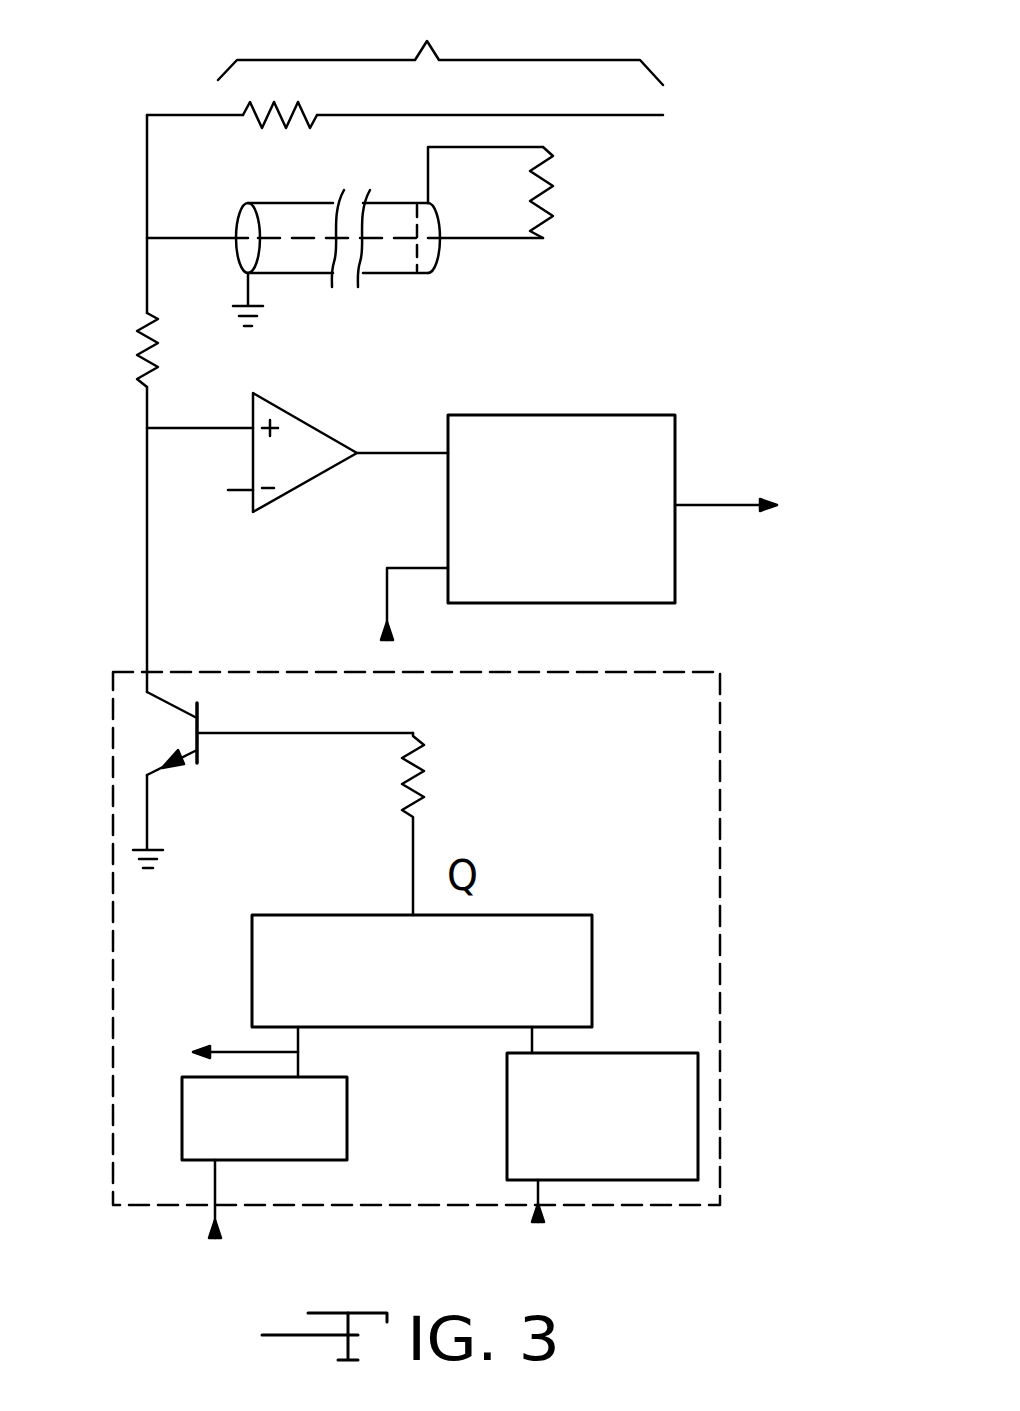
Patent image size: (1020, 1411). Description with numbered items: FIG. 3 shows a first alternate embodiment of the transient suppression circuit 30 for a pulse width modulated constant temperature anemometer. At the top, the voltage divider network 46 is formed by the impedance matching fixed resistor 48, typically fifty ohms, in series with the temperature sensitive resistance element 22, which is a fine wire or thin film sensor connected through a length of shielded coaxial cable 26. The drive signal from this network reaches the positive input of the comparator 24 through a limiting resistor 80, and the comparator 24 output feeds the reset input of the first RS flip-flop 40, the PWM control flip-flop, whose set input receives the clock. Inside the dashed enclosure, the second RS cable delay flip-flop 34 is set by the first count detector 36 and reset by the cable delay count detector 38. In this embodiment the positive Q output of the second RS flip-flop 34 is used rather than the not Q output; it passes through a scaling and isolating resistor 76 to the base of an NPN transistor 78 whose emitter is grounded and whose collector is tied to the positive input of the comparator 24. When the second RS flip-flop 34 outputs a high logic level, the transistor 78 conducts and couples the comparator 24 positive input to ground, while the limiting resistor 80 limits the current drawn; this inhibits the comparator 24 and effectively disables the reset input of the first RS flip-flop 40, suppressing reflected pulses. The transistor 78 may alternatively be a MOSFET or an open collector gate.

The temperature sensitive resistance element 22 is at (543, 212).
The comparator 24 is at (322, 453).
The coaxial cable 26 is at (377, 277).
The transient suppression circuit 30 is at (830, 830).
The second RS cable delay flip-flop 34 is at (587, 945).
The first count detector 36 is at (327, 1130).
The cable delay count detector 38 is at (693, 1127).
The first RS flip-flop 40 is at (675, 563).
The voltage divider network 46 is at (440, 42).
The impedance matching fixed resistor 48 is at (247, 131).
The scaling and isolating resistor 76 is at (410, 807).
The NPN transistor 78 is at (198, 735).
The limiting resistor 80 is at (141, 347).